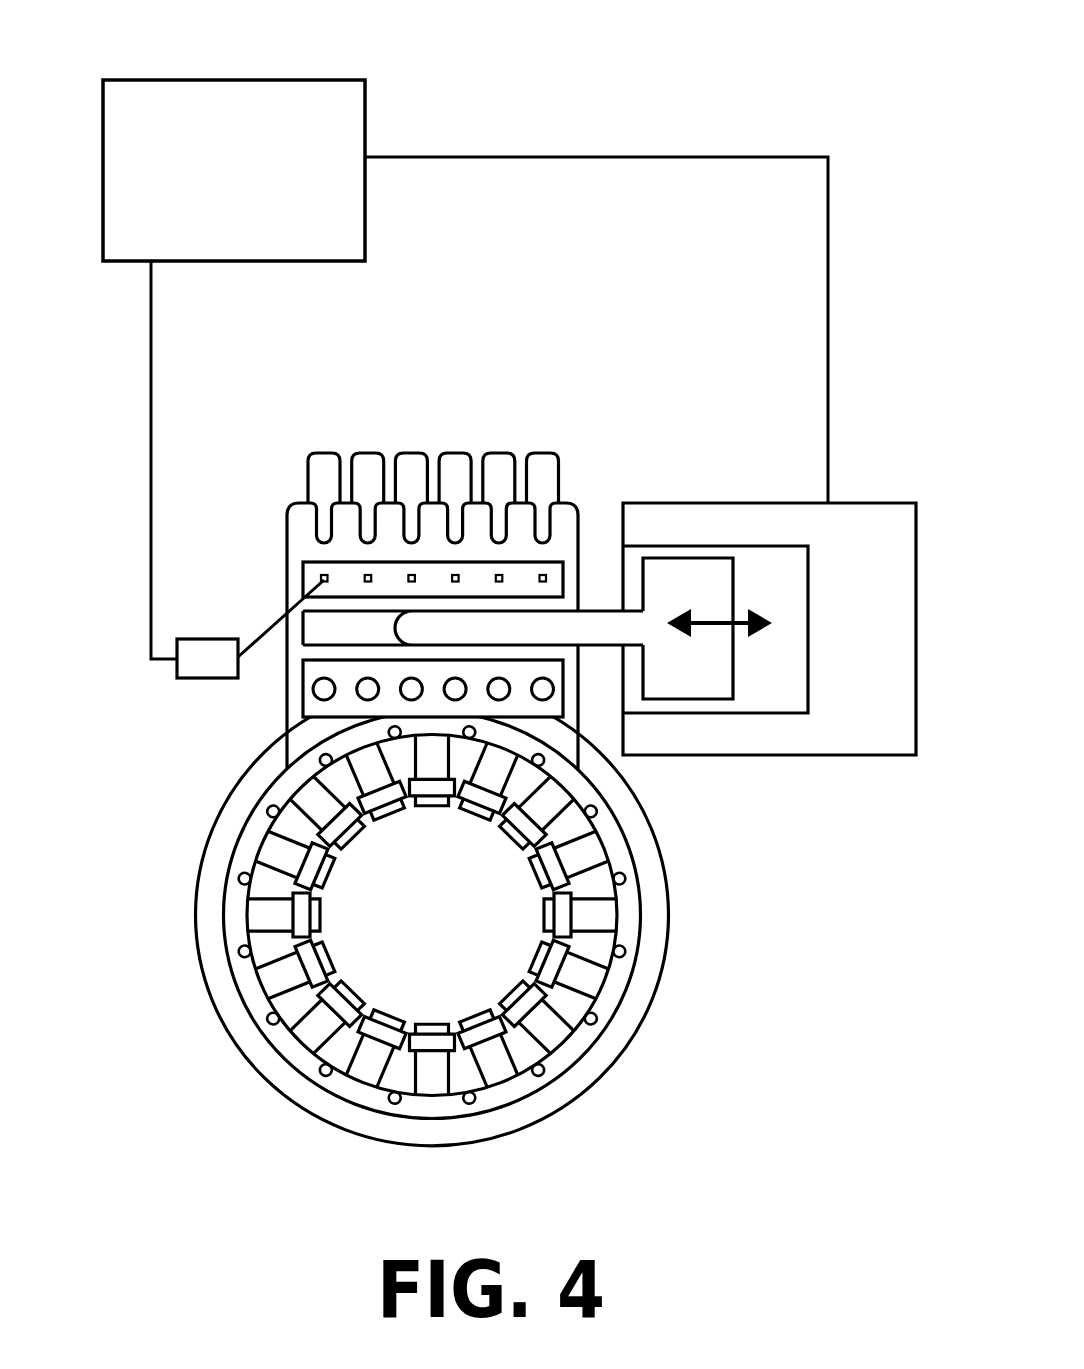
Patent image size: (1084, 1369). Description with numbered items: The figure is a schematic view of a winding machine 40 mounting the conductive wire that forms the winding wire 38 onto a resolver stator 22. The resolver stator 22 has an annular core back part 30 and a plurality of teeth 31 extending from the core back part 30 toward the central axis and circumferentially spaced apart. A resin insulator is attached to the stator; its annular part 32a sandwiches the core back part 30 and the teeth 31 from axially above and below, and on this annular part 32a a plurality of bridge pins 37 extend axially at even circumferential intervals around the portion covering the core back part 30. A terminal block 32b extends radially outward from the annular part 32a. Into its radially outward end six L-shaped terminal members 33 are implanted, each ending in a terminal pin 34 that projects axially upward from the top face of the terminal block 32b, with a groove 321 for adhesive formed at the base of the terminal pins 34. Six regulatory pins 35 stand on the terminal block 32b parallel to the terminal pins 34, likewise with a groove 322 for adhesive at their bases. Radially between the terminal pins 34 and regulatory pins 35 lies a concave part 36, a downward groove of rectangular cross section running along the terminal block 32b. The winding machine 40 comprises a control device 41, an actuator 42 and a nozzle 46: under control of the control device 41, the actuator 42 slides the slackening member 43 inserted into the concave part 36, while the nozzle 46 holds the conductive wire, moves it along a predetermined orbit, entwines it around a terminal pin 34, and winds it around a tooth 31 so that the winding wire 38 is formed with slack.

The resolver stator 22 is at (690, 1075).
The core back part 30 is at (270, 1083).
The teeth 31 is at (393, 814).
The annular part 32a is at (238, 830).
The terminal block 32b is at (291, 505).
The groove 321 is at (552, 570).
The groove 322 is at (305, 716).
The terminal members 33 is at (453, 453).
The terminal pins 34 is at (321, 576).
The regulatory pins 35 is at (547, 690).
The concave part 36 is at (322, 644).
The bridge pins 37 is at (240, 876).
The winding wire 38 is at (272, 623).
The winding machine 40 is at (538, 66).
The control device 41 is at (306, 78).
The actuator 42 is at (867, 503).
The slackening member 43 is at (609, 611).
The nozzle 46 is at (205, 680).